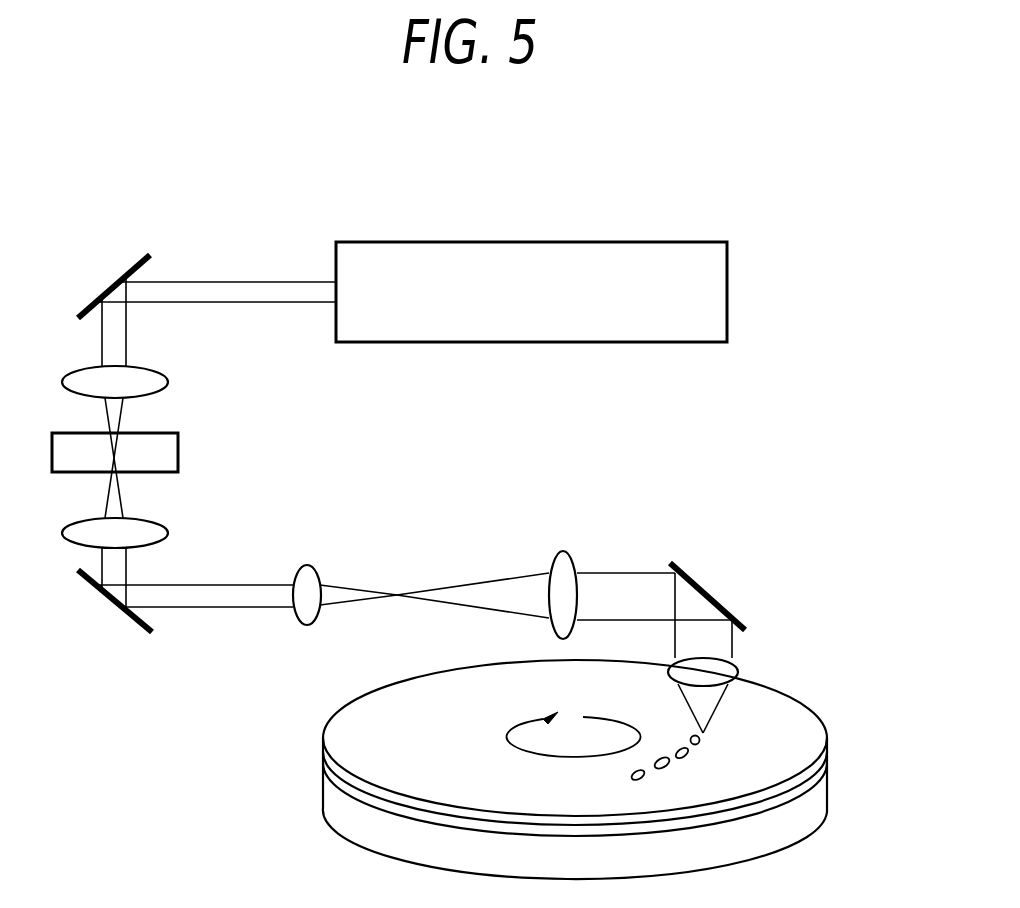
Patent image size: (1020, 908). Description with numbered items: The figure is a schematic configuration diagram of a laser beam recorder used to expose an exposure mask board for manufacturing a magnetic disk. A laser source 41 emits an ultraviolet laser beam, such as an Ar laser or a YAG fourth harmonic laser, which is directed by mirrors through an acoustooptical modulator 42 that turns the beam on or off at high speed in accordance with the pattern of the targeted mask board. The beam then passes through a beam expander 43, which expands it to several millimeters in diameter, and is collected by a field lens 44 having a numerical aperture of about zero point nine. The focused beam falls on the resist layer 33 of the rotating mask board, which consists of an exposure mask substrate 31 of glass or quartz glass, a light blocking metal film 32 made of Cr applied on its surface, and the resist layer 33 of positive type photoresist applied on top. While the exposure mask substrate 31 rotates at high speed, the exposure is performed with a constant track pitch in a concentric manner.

The laser source 41 is at (545, 257).
The acoustooptical modulator 42 is at (168, 453).
The beam expander 43 is at (425, 530).
The field lens 44 is at (728, 668).
The resist layer 33 is at (800, 722).
The light blocking metal film 32 is at (820, 767).
The exposure mask substrate 31 is at (810, 807).